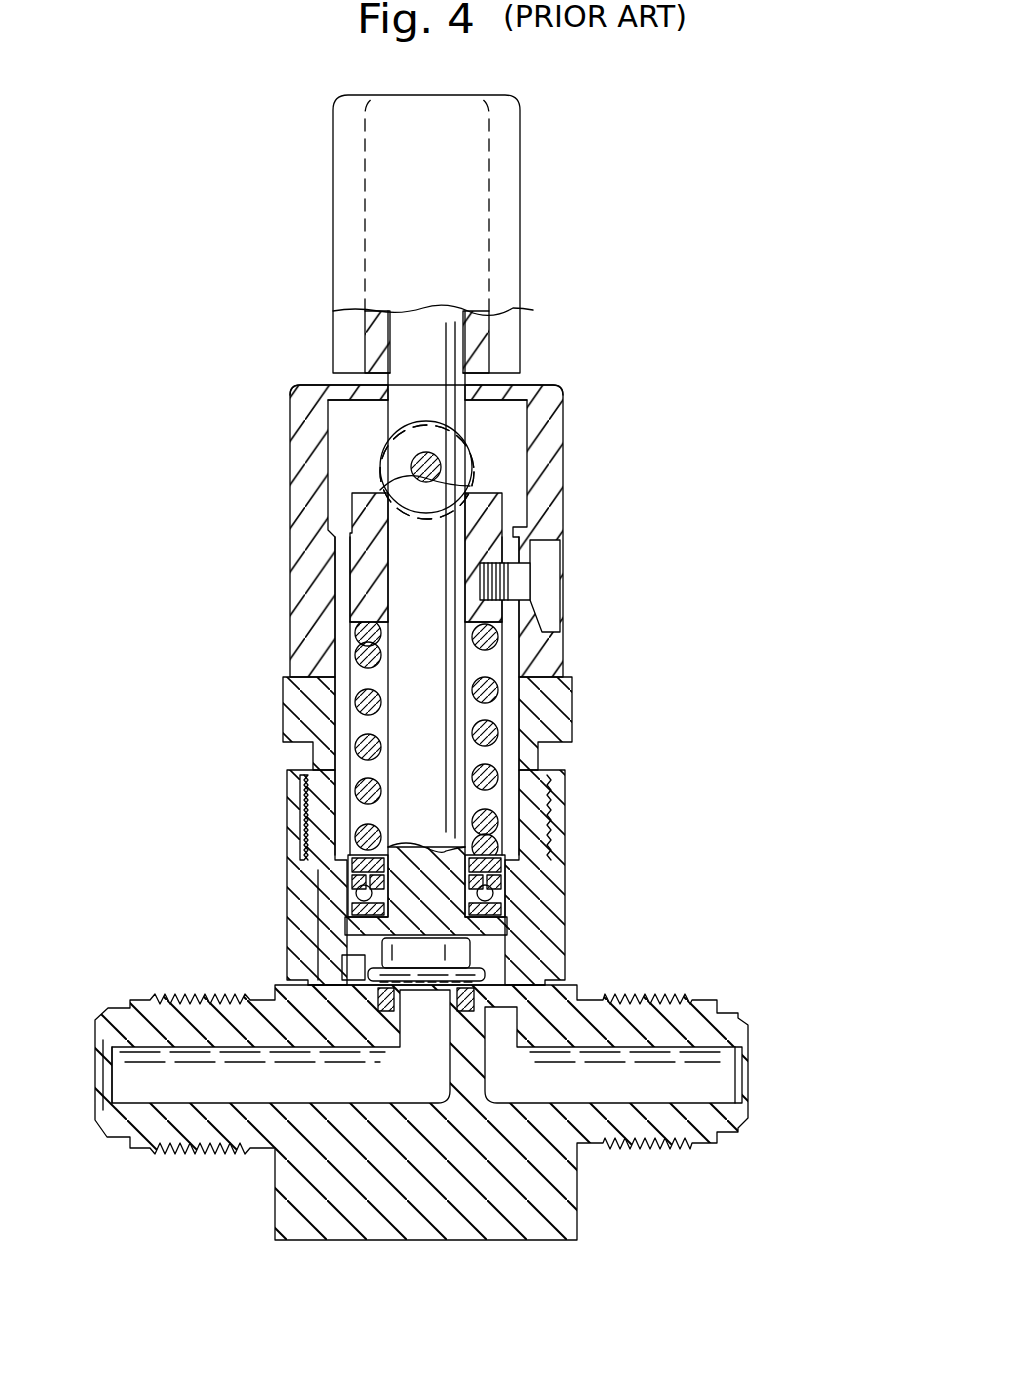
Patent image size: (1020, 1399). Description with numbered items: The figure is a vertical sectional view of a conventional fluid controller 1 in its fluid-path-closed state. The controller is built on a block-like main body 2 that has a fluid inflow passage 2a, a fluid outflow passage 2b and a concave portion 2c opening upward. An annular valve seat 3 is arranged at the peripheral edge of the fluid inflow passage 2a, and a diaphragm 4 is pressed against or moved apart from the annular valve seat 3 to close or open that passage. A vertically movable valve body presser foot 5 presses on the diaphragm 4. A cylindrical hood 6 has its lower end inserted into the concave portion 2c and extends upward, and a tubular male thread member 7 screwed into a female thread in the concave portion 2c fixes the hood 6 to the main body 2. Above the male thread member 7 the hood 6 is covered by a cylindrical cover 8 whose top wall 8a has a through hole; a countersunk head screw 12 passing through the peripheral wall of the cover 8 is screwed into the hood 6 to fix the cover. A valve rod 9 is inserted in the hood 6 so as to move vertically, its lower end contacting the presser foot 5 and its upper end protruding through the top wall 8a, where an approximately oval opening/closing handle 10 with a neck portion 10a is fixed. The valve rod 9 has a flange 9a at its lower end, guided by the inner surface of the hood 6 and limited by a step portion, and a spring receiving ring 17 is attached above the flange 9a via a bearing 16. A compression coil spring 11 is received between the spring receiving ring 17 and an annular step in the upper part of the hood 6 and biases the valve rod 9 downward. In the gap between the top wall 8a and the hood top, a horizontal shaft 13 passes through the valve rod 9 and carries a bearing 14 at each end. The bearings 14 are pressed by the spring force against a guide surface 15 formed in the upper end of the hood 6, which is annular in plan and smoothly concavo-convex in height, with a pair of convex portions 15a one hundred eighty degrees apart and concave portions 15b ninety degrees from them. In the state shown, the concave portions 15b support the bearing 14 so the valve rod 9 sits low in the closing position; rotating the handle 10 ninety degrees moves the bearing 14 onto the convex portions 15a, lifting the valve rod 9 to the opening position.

The fluid controller 1 is at (592, 680).
The main body 2 is at (535, 1232).
The fluid inflow passage 2a is at (158, 1092).
The fluid outflow passage 2b is at (662, 1090).
The concave portion 2c is at (320, 913).
The annular valve seat 3 is at (520, 1010).
The diaphragm 4 is at (470, 972).
The valve body presser foot 5 is at (450, 910).
The hood 6 is at (318, 795).
The tubular male thread member 7 is at (300, 703).
The cover 8 is at (305, 622).
The top wall 8a is at (340, 382).
The valve rod 9 is at (435, 755).
The flange 9a is at (365, 943).
The opening/closing handle 10 is at (520, 238).
The neck portion 10a is at (490, 188).
The compression coil spring 11 is at (500, 680).
The countersunk head screw 12 is at (545, 581).
The horizontal shaft 13 is at (414, 463).
The bearing 14 is at (503, 438).
The guide surface 15 is at (380, 505).
The convex portion 15a is at (378, 492).
The concave portion 15b is at (383, 522).
The bearing 16 is at (352, 878).
The spring receiving ring 17 is at (497, 862).